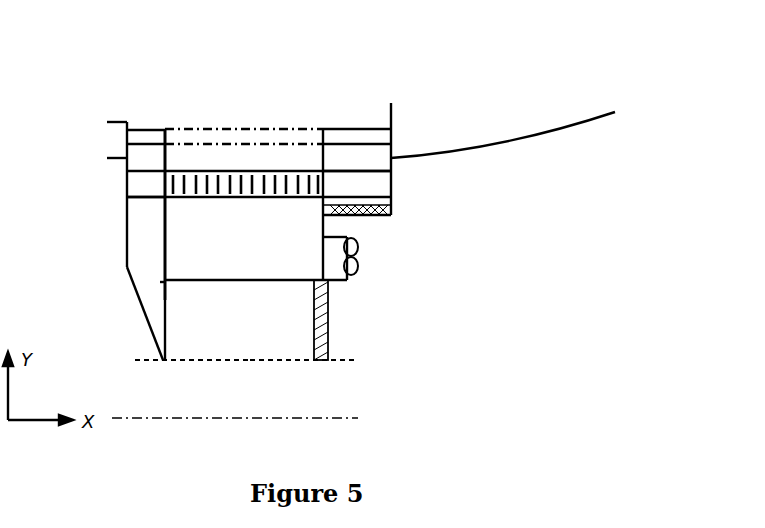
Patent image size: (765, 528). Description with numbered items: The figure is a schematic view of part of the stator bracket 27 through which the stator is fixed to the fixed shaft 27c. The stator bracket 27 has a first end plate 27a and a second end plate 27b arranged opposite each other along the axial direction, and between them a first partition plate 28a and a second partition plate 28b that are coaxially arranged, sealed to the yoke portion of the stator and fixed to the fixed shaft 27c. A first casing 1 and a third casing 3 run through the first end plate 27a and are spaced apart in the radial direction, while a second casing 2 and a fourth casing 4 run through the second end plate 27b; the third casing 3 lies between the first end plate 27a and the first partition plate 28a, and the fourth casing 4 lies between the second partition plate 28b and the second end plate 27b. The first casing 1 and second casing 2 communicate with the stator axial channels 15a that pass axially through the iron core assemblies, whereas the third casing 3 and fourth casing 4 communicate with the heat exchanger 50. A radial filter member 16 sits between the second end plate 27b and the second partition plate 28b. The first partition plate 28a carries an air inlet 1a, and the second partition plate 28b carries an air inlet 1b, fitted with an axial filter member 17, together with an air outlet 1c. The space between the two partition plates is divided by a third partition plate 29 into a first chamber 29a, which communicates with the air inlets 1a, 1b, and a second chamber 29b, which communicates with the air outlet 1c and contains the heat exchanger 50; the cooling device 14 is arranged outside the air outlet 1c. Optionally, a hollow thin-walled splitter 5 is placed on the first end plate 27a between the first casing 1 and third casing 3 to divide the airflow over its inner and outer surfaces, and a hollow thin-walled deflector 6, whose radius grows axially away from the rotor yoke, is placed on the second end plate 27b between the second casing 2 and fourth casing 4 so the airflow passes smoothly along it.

The stator bracket 27 is at (272, 56).
The first casing 1 is at (147, 128).
The splitter 5 is at (120, 157).
The third casing 3 is at (130, 192).
The stator axial channels 15a is at (220, 132).
The second casing 2 is at (352, 128).
The second end plate 27b is at (396, 112).
The deflector 6 is at (513, 140).
The fourth casing 4 is at (388, 186).
The radial filter member 16 is at (398, 212).
The heat exchanger 50 is at (253, 189).
The air outlet 1c is at (321, 273).
The cooling device 14 is at (358, 259).
The third partition plate 29 is at (246, 286).
The first partition plate 28a is at (167, 261).
The second partition plate 28b is at (328, 297).
The second chamber 29b is at (162, 281).
The first end plate 27a is at (124, 247).
The air inlet 1a is at (166, 302).
The axial filter member 17 is at (331, 334).
The air inlet 1b is at (321, 320).
The first chamber 29a is at (228, 359).
The fixed shaft 27c is at (298, 363).